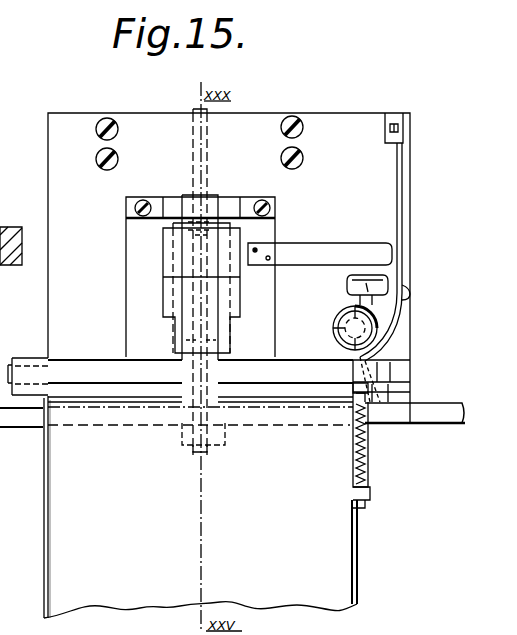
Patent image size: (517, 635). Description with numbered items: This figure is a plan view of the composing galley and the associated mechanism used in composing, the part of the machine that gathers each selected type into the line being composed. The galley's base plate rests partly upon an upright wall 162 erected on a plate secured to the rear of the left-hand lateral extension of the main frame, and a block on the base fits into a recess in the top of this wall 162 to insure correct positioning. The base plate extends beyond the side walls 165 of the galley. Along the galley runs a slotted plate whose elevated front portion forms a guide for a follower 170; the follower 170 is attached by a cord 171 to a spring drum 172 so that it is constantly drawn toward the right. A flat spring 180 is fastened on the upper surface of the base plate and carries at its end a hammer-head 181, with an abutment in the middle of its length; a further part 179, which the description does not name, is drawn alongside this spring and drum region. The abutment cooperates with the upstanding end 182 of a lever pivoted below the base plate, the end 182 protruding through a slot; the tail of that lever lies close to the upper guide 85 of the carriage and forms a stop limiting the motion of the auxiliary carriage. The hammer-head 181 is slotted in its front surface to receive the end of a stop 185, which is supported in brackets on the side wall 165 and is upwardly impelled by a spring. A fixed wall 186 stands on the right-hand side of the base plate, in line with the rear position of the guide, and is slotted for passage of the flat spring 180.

The upright wall 162 is at (343, 123).
The side walls of the galley 165 is at (361, 533).
The follower 170 is at (20, 360).
The cord 171 is at (76, 359).
The spring drum 172 is at (336, 327).
The lever arm 179 is at (313, 258).
The flat spring 180 is at (400, 212).
The hammer-head 181 is at (380, 386).
The upstanding end of lever 182 is at (352, 285).
The stop 185 is at (370, 397).
The fixed wall 186 is at (405, 368).
The upper guide of the carriage 85 is at (432, 418).